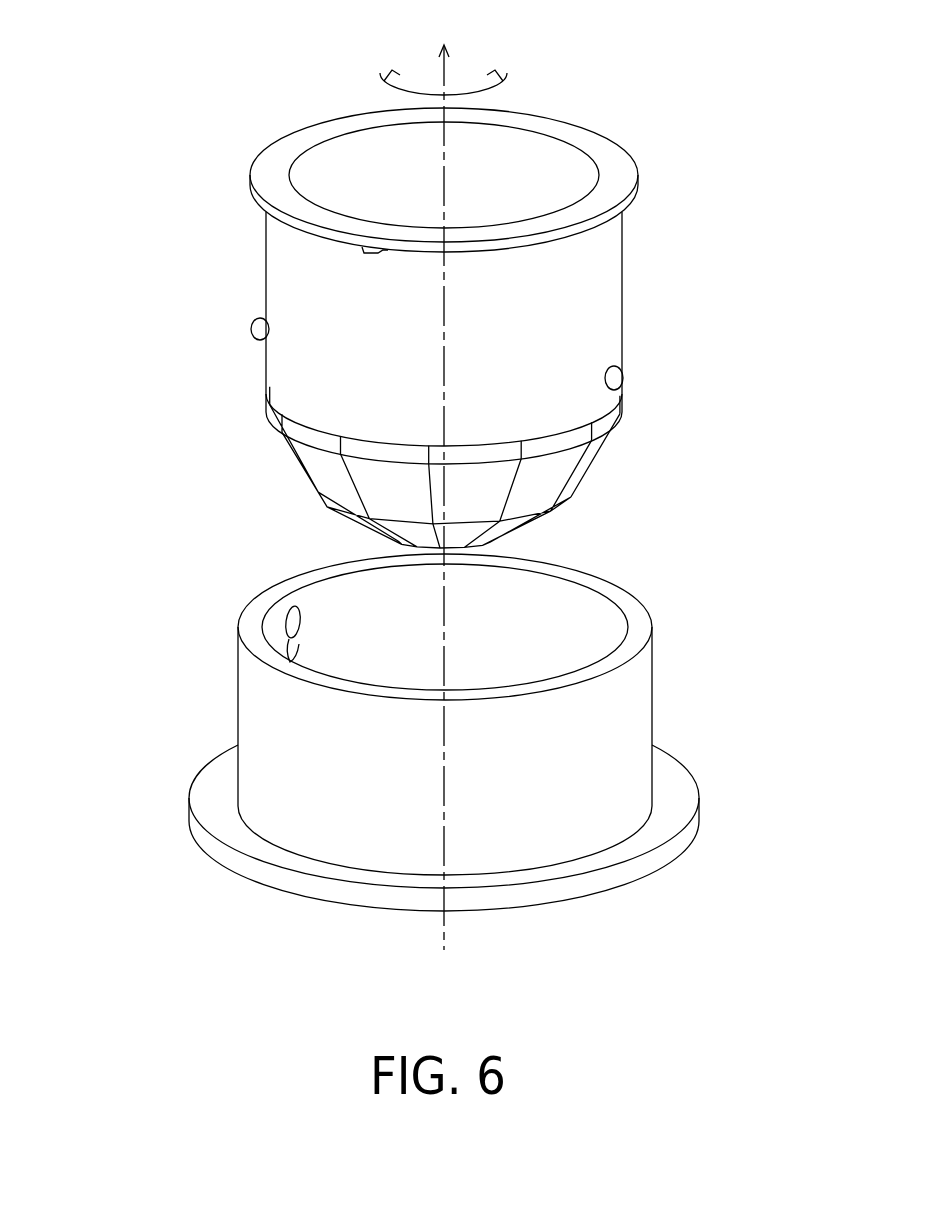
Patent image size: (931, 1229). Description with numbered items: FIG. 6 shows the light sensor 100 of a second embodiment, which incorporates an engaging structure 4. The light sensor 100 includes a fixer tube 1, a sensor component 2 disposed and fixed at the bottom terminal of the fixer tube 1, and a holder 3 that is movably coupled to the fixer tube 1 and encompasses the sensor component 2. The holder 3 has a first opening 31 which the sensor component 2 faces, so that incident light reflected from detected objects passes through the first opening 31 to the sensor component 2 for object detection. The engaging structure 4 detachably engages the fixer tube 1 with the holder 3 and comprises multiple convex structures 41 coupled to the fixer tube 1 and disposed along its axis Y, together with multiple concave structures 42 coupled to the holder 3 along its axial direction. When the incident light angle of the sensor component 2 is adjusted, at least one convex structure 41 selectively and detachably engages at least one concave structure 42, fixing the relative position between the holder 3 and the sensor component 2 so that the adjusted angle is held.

The light sensor 100 is at (219, 74).
The fixer tube 1 is at (576, 347).
The sensor component 2 is at (578, 492).
The holder 3 is at (637, 733).
The first opening 31 is at (446, 912).
The engaging structure 4 is at (108, 440).
The convex structures 41 is at (623, 372).
The concave structures 42 is at (287, 623).